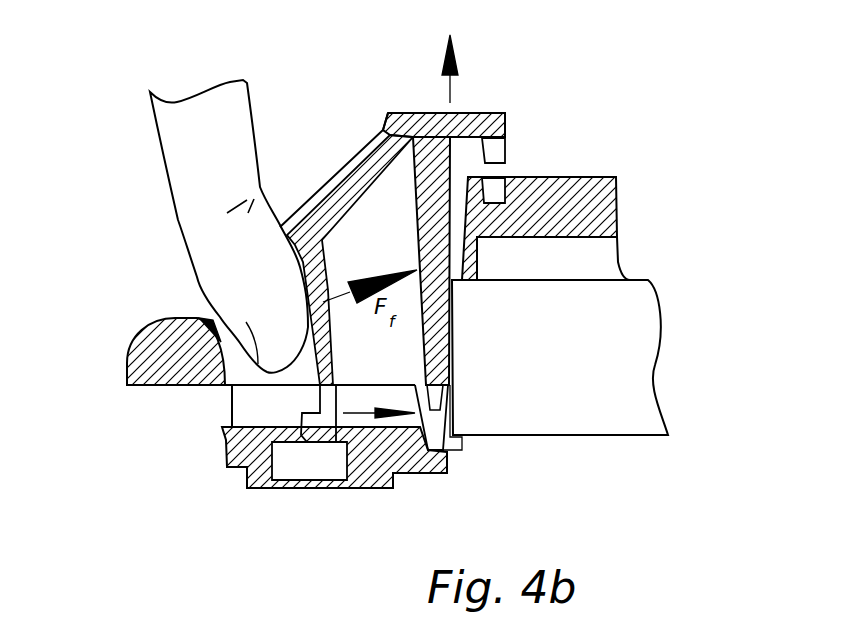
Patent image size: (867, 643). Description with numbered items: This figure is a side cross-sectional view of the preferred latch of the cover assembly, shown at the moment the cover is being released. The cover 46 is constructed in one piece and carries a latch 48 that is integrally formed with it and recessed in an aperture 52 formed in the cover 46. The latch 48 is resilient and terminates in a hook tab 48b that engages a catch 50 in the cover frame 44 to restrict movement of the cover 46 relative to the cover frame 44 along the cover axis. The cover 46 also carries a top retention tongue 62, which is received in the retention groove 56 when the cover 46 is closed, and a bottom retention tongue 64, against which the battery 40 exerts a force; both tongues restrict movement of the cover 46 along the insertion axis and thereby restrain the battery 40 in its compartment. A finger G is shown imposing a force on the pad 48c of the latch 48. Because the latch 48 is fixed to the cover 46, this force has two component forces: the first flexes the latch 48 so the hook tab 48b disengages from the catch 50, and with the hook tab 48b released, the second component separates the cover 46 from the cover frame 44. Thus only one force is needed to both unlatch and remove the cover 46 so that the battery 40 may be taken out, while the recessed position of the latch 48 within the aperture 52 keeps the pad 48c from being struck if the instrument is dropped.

The finger G is at (230, 133).
The battery 40 is at (637, 325).
The cover frame 44 is at (287, 471).
The cover 46 is at (405, 118).
The latch 48 is at (310, 306).
The hook tab 48b is at (308, 427).
The pad 48c is at (323, 245).
The catch 50 is at (328, 468).
The aperture 52 is at (198, 318).
The retention groove 56 is at (497, 190).
The top retention tongue 62 is at (497, 153).
The bottom retention tongue 64 is at (442, 345).